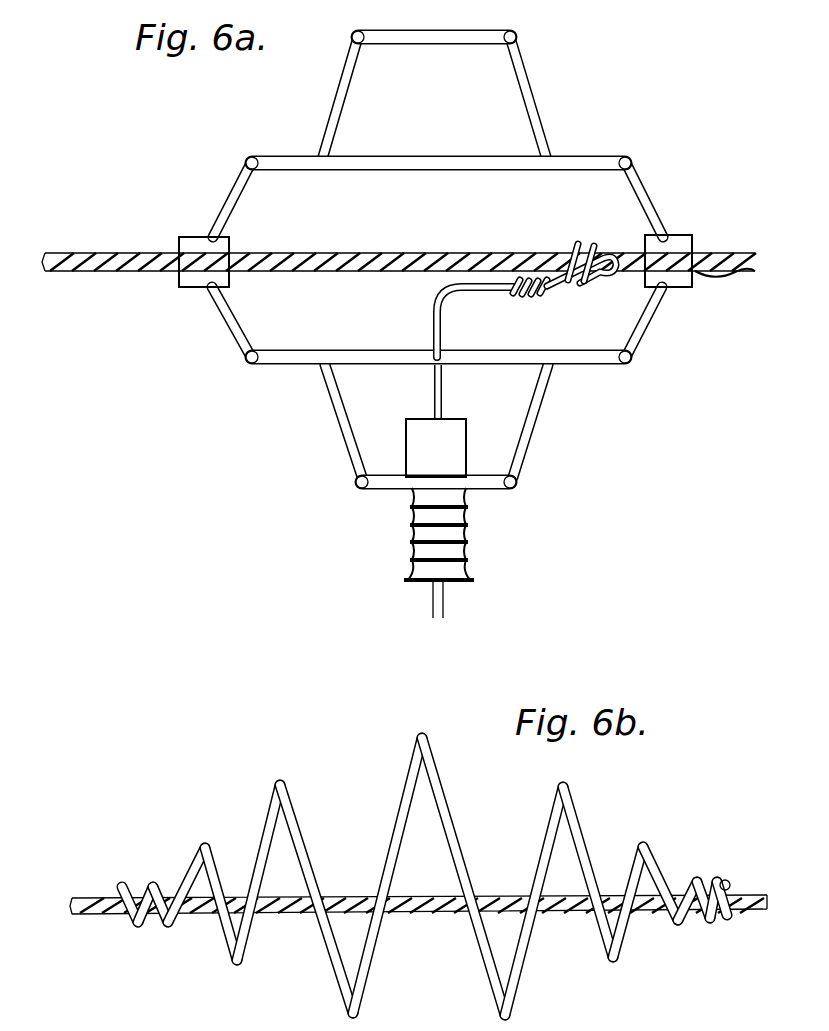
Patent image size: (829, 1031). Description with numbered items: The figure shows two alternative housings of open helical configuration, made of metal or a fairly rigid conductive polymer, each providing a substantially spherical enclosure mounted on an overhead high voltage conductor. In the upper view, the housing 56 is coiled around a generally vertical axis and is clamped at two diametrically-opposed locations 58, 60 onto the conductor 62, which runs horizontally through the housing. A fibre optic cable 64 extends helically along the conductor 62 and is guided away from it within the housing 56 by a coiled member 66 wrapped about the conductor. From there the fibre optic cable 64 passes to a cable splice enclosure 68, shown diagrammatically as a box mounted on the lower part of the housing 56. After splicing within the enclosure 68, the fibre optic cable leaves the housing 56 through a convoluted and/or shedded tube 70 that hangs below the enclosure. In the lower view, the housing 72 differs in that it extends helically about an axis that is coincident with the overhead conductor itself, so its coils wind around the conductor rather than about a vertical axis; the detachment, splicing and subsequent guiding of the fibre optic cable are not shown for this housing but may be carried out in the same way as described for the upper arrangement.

In FIG. 6A, the housing 56 is at (548, 118).
In FIG. 6A, the clamping location 58 is at (192, 243).
In FIG. 6A, the clamping location 60 is at (670, 242).
In FIG. 6A, the conductor 62 is at (413, 262).
In FIG. 6A, the fibre optic cable 64 is at (580, 292).
In FIG. 6A, the coiled member 66 is at (570, 248).
In FIG. 6A, the cable splice enclosure 68 is at (450, 465).
In FIG. 6A, the convoluted and/or shedded tube 70 is at (453, 533).
In FIG. 6B, the housing 72 is at (402, 764).